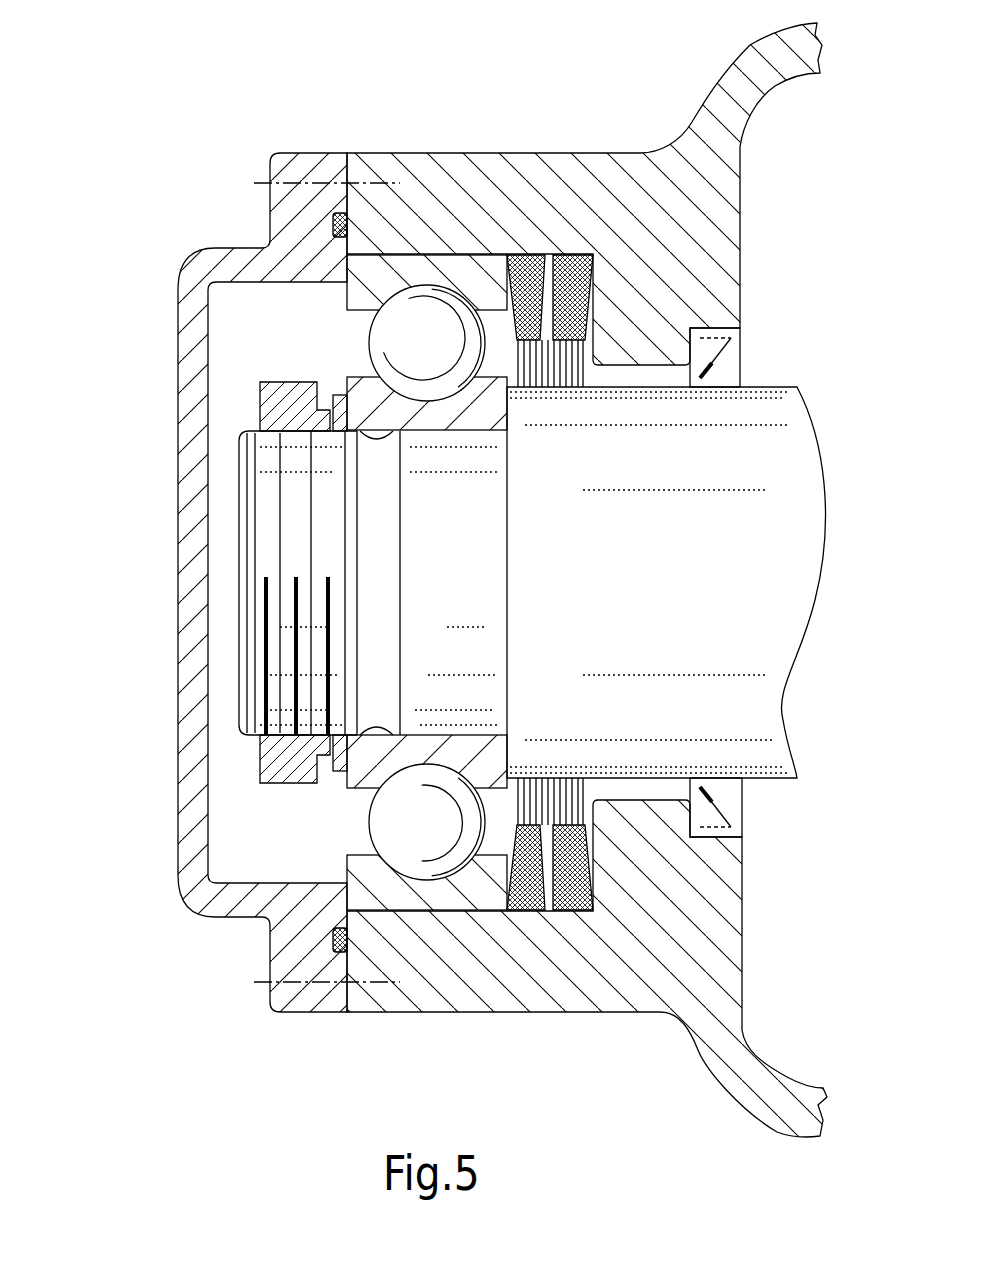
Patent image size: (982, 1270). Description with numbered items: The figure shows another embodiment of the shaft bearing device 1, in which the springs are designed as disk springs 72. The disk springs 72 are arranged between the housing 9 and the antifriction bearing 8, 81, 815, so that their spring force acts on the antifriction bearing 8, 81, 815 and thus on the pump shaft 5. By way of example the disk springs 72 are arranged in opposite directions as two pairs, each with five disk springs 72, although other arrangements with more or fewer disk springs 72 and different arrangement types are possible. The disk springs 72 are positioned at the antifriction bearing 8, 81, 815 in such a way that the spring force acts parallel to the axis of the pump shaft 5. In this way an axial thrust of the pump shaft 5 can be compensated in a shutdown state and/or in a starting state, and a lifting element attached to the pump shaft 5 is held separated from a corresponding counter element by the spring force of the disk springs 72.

The shaft bearing device 1 is at (586, 65).
The pump shaft 5 is at (718, 718).
The disk springs 72 is at (522, 253).
The housing 9 is at (658, 222).
The antifriction bearing 8 is at (346, 336).
The antifriction bearing 81 is at (340, 582).
The antifriction bearing 815 is at (303, 582).